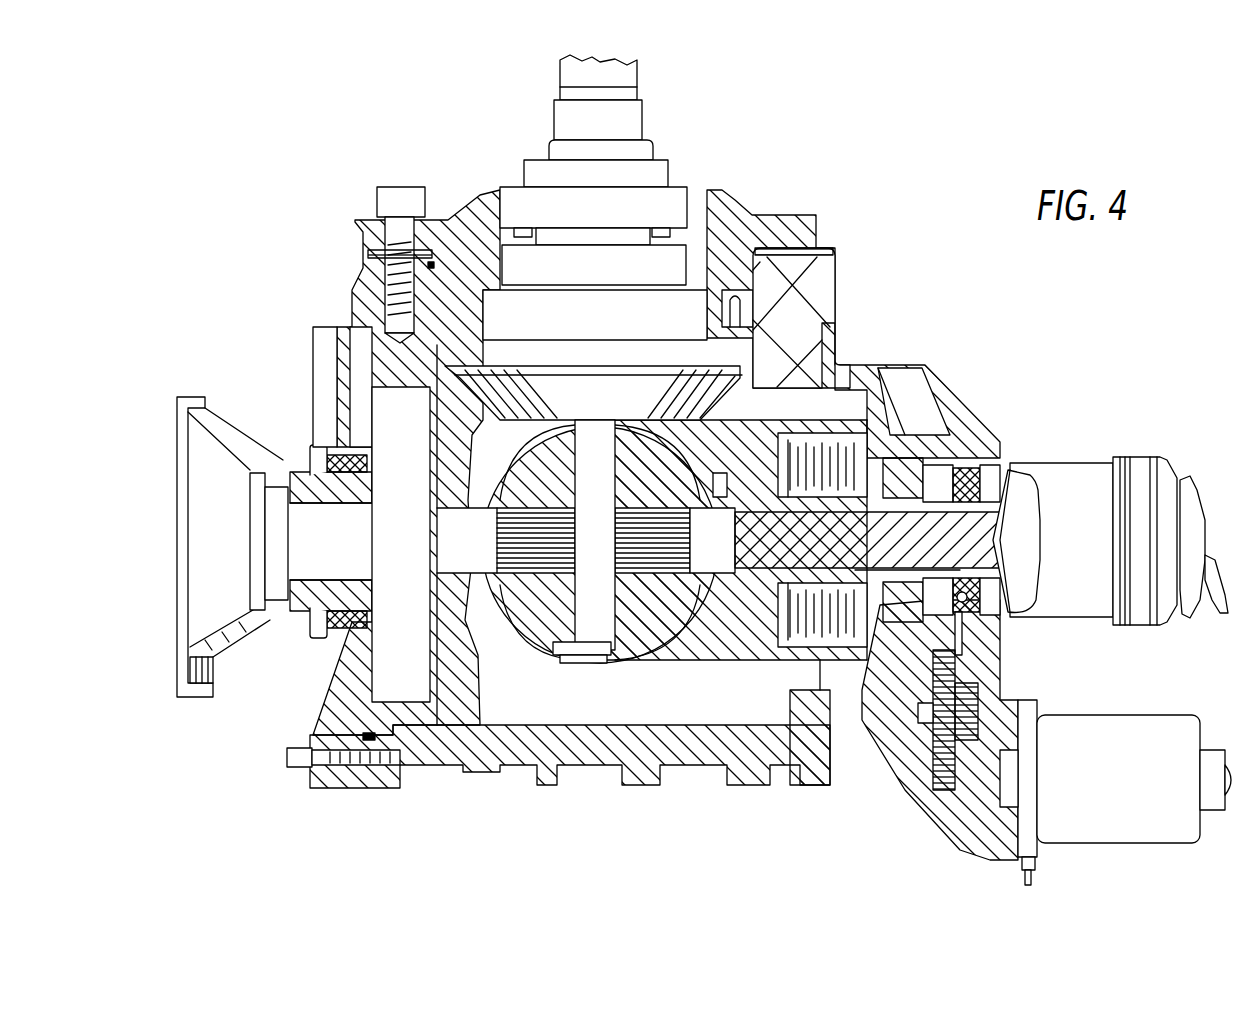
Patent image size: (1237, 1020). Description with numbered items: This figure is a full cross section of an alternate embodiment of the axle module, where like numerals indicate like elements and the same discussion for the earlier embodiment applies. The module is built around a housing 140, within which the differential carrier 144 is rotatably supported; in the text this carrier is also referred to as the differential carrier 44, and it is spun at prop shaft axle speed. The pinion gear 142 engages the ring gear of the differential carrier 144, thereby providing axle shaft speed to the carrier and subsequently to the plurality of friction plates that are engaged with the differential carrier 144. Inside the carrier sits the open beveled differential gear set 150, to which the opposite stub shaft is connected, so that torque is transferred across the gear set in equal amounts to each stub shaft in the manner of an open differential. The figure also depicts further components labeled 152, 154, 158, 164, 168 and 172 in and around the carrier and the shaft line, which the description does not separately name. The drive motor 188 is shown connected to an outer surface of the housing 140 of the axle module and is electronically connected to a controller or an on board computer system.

The differential carrier 44 is at (320, 448).
The housing 140 is at (990, 652).
The pinion gear 142 is at (600, 470).
The differential carrier 144 is at (703, 640).
The open beveled differential gear set 150 is at (556, 590).
The bearing cap 152 is at (740, 390).
The pinion shaft 154 is at (598, 455).
The output shaft 158 is at (897, 530).
The second side gear 164 is at (655, 560).
The clutch pack 168 is at (830, 457).
The seal 172 is at (1003, 465).
The drive motor 188 is at (1118, 728).